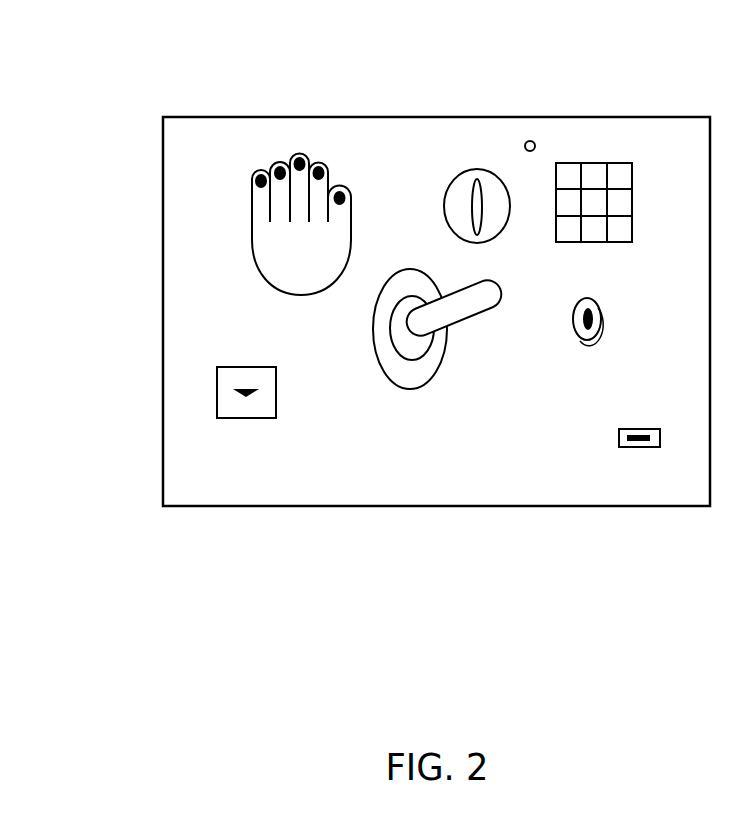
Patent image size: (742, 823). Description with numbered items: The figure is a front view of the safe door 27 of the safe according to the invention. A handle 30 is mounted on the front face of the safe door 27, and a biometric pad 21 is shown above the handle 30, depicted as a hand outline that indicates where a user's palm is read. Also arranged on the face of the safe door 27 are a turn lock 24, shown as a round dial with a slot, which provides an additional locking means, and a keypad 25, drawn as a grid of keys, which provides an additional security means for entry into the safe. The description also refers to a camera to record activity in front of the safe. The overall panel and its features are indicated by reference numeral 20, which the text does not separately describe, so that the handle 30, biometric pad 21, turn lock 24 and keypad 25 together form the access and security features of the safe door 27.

The control panel 20 is at (528, 141).
The biometric pad 21 is at (299, 153).
The turn lock 24 is at (468, 168).
The keypad 25 is at (593, 163).
The safe door 27 is at (187, 331).
The handle 30 is at (402, 386).